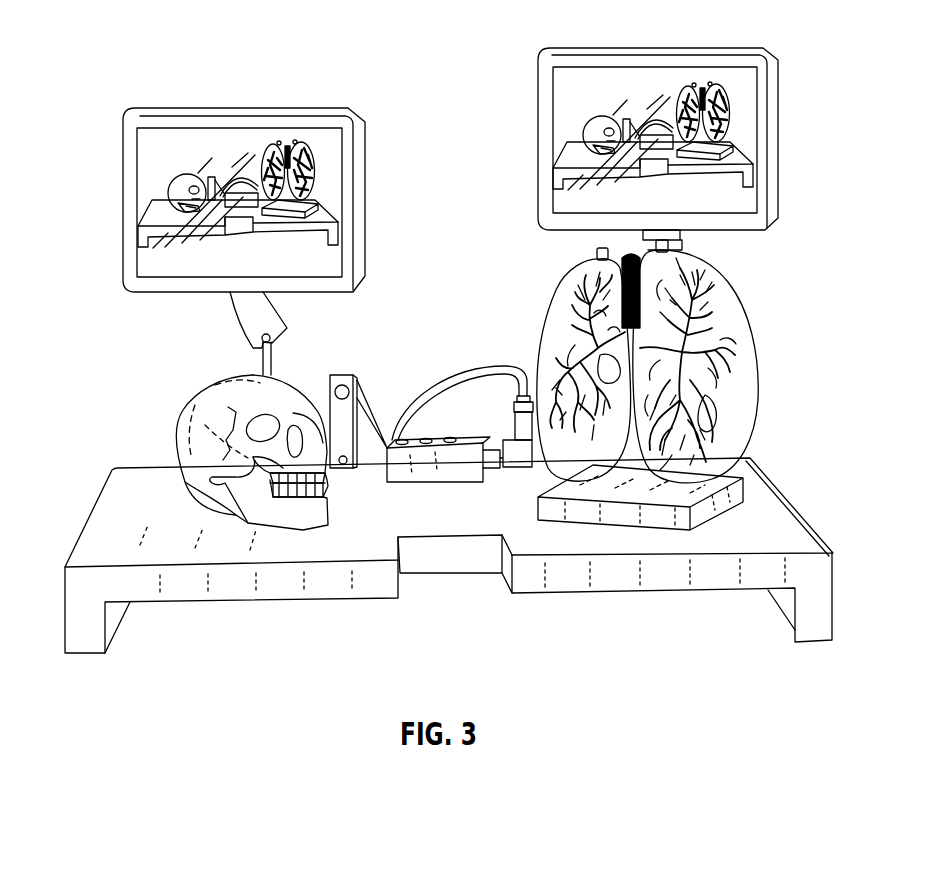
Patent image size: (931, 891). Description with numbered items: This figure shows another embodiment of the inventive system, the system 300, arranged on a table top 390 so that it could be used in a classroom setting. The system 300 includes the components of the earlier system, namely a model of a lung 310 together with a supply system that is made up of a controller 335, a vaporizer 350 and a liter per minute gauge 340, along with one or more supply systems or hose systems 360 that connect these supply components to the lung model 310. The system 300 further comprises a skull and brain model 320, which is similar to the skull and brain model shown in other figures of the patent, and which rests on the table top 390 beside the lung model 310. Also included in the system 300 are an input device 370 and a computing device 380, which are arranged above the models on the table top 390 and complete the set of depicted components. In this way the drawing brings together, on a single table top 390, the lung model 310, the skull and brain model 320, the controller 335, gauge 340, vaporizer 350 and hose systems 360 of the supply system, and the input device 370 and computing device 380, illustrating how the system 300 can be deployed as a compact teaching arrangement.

The system 300 is at (118, 46).
The model of a lung 310 is at (725, 320).
The skull and brain model 320 is at (182, 425).
The controller 335 is at (455, 467).
The liter per minute gauge 340 is at (345, 375).
The vaporizer 350 is at (522, 428).
The supply system or hose system 360 is at (450, 378).
The input device 370 is at (637, 82).
The computing device 380 is at (210, 147).
The table top 390 is at (100, 538).